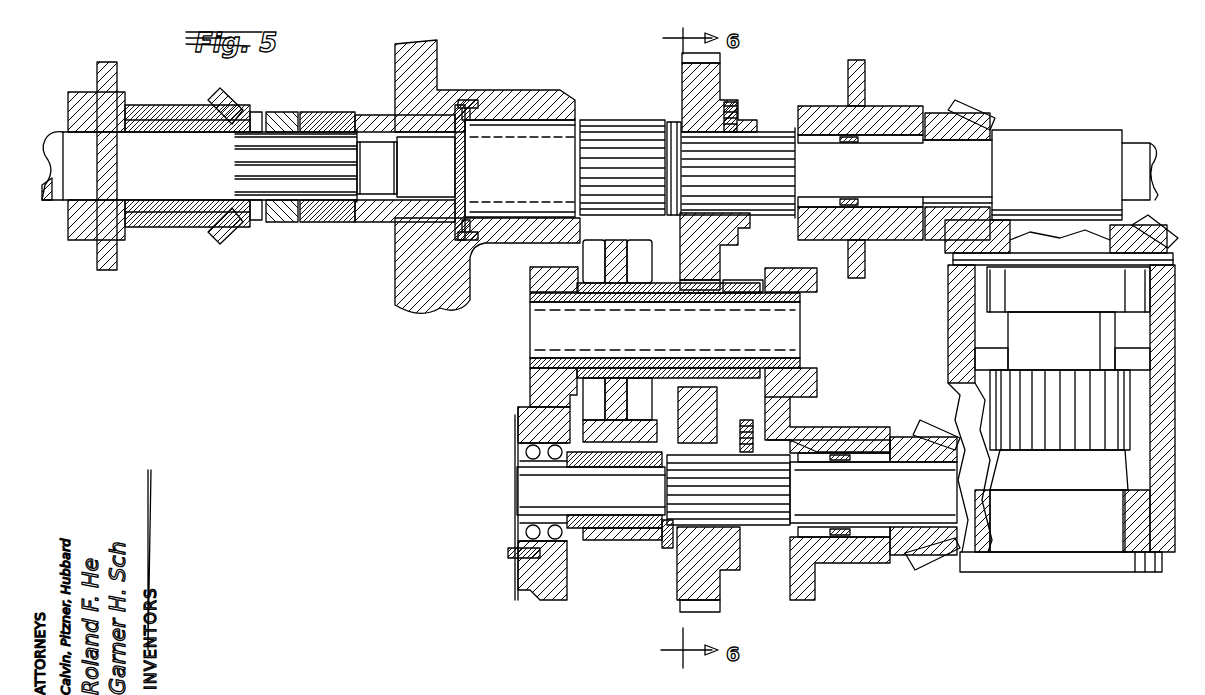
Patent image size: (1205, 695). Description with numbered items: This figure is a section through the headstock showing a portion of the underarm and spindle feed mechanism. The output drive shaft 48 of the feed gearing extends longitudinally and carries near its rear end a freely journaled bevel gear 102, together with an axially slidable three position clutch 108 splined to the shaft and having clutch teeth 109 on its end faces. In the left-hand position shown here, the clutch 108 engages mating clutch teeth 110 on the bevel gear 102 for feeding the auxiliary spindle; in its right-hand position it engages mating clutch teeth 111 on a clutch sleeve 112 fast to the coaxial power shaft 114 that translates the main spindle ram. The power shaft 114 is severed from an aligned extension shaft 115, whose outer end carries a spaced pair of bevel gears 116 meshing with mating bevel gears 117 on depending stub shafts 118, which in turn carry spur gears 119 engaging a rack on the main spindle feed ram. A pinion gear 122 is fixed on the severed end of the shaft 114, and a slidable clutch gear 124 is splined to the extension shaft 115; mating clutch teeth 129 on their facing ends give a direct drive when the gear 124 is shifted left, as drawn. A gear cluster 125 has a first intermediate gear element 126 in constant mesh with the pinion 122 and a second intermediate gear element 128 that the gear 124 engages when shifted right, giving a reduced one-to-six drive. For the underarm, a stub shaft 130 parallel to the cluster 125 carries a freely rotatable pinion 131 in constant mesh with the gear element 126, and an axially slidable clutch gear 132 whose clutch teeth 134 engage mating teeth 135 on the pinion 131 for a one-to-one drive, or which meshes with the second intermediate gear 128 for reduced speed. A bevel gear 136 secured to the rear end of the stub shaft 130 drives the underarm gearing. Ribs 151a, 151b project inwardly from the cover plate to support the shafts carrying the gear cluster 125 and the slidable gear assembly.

The output drive shaft 48 is at (62, 142).
The bevel gear 102 is at (226, 105).
The three position clutch 108 is at (290, 218).
The clutch teeth 109 is at (280, 224).
The clutch teeth 110 is at (272, 118).
The clutch teeth 111 is at (357, 222).
The clutch sleeve 112 is at (378, 114).
The coaxial power shaft 114 is at (560, 122).
The extension shaft 115 is at (781, 145).
The bevel gears 116 is at (980, 122).
The mating bevel gears 117 is at (1150, 236).
The stub shafts 118 is at (1020, 330).
The spur gears 119 is at (1056, 385).
The pinion gear 122 is at (612, 120).
The slidable clutch gear 124 is at (722, 74).
The gear cluster 125 is at (662, 390).
The first intermediate gear element 126 is at (584, 252).
The second intermediate gear element 128 is at (752, 287).
The clutch teeth 129 is at (666, 118).
The stub shaft 130 is at (530, 490).
The pinion 131 is at (620, 540).
The slidable clutch gear 132 is at (682, 608).
The clutch teeth 134 is at (668, 545).
The mating teeth 135 is at (670, 450).
The bevel gear 136 is at (930, 565).
The rib 151a is at (532, 585).
The rib 151b is at (790, 590).